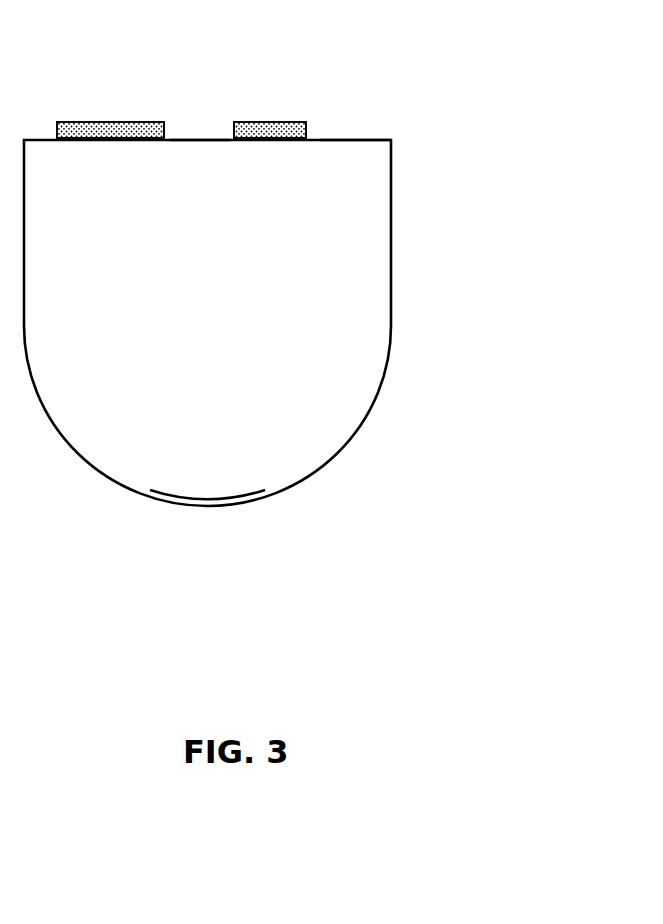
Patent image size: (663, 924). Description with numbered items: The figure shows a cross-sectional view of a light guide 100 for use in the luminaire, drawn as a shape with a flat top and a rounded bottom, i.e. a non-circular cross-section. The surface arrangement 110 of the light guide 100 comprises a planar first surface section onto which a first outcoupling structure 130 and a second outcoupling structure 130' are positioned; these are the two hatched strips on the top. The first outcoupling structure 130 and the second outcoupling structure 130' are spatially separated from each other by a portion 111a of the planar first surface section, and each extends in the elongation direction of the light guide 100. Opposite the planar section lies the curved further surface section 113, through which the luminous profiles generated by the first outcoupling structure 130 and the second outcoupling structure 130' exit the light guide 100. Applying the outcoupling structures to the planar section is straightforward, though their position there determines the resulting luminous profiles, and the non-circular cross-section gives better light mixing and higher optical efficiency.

The light guide 100 is at (271, 357).
The surface arrangement 110 is at (392, 247).
The portion of the first surface section 111a is at (197, 140).
The further surface section 113 is at (353, 140).
The first outcoupling structure 130 is at (110, 75).
The second outcoupling structure 130' is at (270, 72).